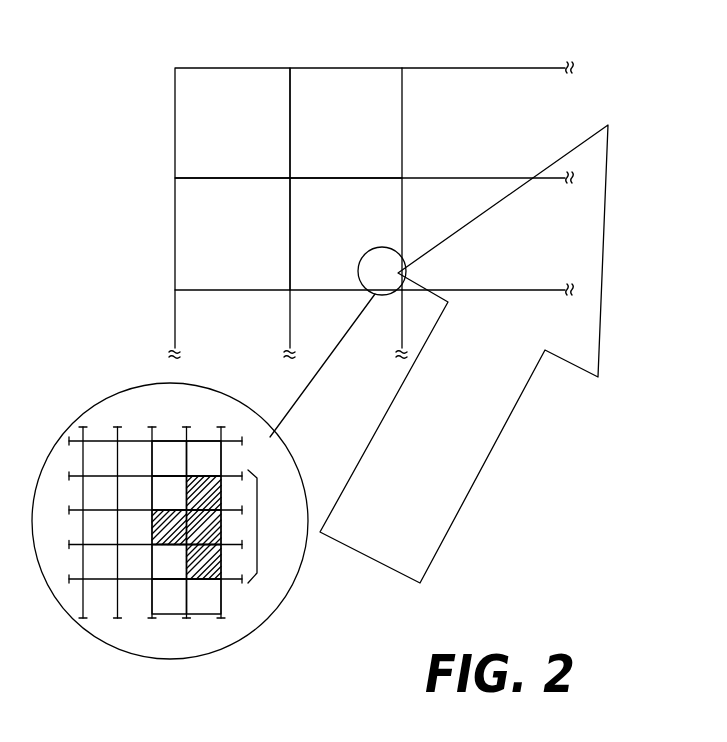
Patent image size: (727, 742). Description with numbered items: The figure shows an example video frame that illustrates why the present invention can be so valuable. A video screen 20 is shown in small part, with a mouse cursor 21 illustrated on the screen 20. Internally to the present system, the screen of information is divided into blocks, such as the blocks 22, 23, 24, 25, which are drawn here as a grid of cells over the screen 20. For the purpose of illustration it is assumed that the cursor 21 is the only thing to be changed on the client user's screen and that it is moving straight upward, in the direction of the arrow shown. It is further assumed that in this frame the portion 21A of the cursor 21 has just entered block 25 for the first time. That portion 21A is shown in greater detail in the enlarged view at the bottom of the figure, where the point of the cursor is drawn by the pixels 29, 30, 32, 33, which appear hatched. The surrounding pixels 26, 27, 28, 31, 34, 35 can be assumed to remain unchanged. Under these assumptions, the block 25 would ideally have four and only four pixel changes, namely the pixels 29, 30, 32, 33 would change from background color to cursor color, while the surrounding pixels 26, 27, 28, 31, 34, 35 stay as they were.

The video screen 20 is at (371, 182).
The mouse cursor 21 is at (604, 243).
The portion of the cursor 21A is at (395, 268).
The block 22 is at (232, 123).
The block 23 is at (346, 123).
The block 24 is at (232, 234).
The block 25 is at (346, 234).
The surrounding pixel 26 is at (169, 458).
The surrounding pixel 27 is at (204, 458).
The surrounding pixel 28 is at (169, 493).
The pixel 29 is at (223, 491).
The pixel 30 is at (153, 520).
The surrounding pixel 31 is at (169, 562).
The pixel 32 is at (223, 525).
The pixel 33 is at (223, 558).
The surrounding pixel 34 is at (169, 596).
The surrounding pixel 35 is at (204, 596).